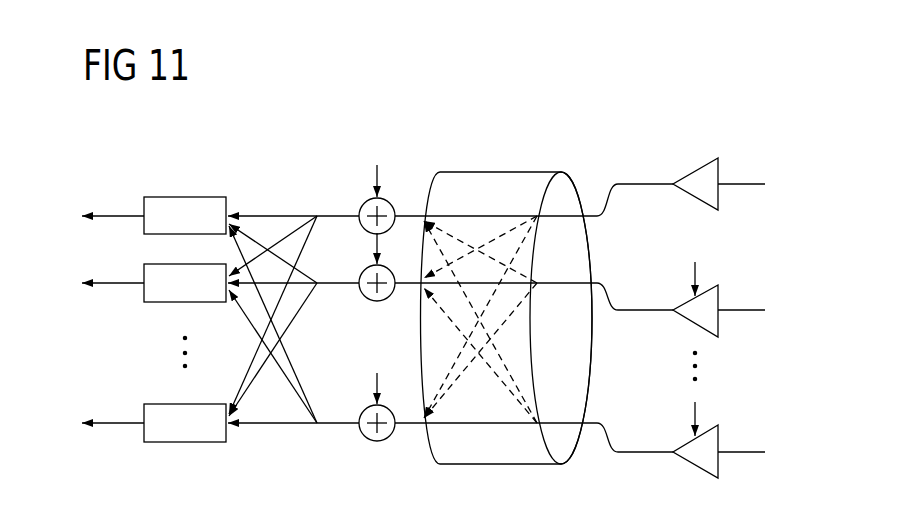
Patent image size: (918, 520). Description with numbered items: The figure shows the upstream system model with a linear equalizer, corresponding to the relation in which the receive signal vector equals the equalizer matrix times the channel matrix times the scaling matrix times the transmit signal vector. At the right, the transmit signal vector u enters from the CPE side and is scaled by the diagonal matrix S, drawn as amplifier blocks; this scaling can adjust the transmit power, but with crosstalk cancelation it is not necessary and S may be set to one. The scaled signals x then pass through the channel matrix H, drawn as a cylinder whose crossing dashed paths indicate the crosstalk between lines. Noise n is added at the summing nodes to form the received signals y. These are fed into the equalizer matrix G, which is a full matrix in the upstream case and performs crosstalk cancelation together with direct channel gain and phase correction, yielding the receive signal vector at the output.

The equalizer matrix G is at (185, 281).
The received signal vector y is at (293, 296).
The noise added at adders n is at (377, 289).
The channel matrix H is at (493, 291).
The transmit signal vector x is at (628, 296).
The diagonal matrix S is at (695, 170).
The transmit signal vector u is at (741, 295).